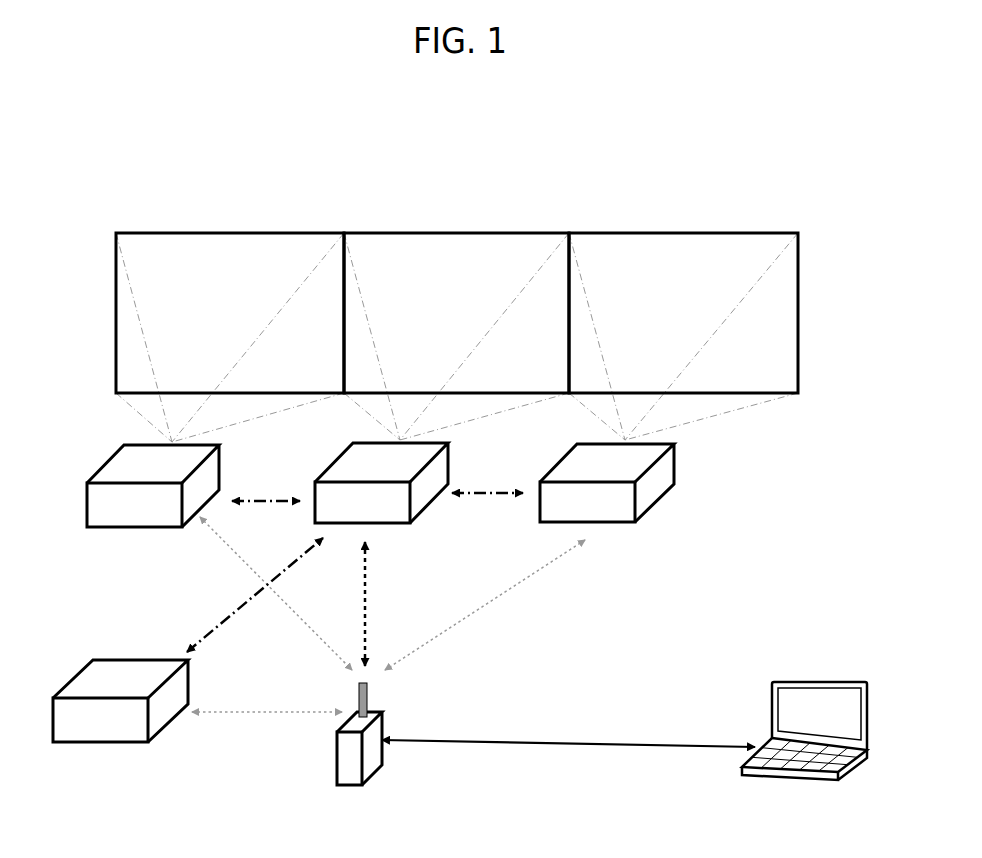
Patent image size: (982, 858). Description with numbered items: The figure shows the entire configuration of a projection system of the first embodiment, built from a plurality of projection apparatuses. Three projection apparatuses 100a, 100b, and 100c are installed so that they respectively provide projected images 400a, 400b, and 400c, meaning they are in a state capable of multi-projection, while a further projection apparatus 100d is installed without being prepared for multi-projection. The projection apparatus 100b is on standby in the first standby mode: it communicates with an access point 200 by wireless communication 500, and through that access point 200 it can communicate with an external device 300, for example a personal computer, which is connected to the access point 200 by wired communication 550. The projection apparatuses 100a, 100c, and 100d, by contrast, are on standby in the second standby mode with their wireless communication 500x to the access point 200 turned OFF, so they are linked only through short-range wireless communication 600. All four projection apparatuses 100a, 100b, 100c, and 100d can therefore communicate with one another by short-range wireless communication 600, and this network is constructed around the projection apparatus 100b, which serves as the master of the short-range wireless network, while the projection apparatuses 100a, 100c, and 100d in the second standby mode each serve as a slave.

The projection apparatus 100a is at (100, 535).
The projection apparatus 100b is at (432, 512).
The projection apparatus 100c is at (663, 505).
The projection apparatus 100d is at (102, 743).
The access point 200 is at (390, 757).
The external device 300 is at (813, 662).
The projected image 400a is at (205, 222).
The projected image 400b is at (432, 222).
The projected image 400c is at (653, 222).
The wireless communication 500 is at (368, 556).
The wireless communication 500x is at (275, 605).
The wired communication 550 is at (600, 728).
The short-range wireless communication 600 is at (252, 485).